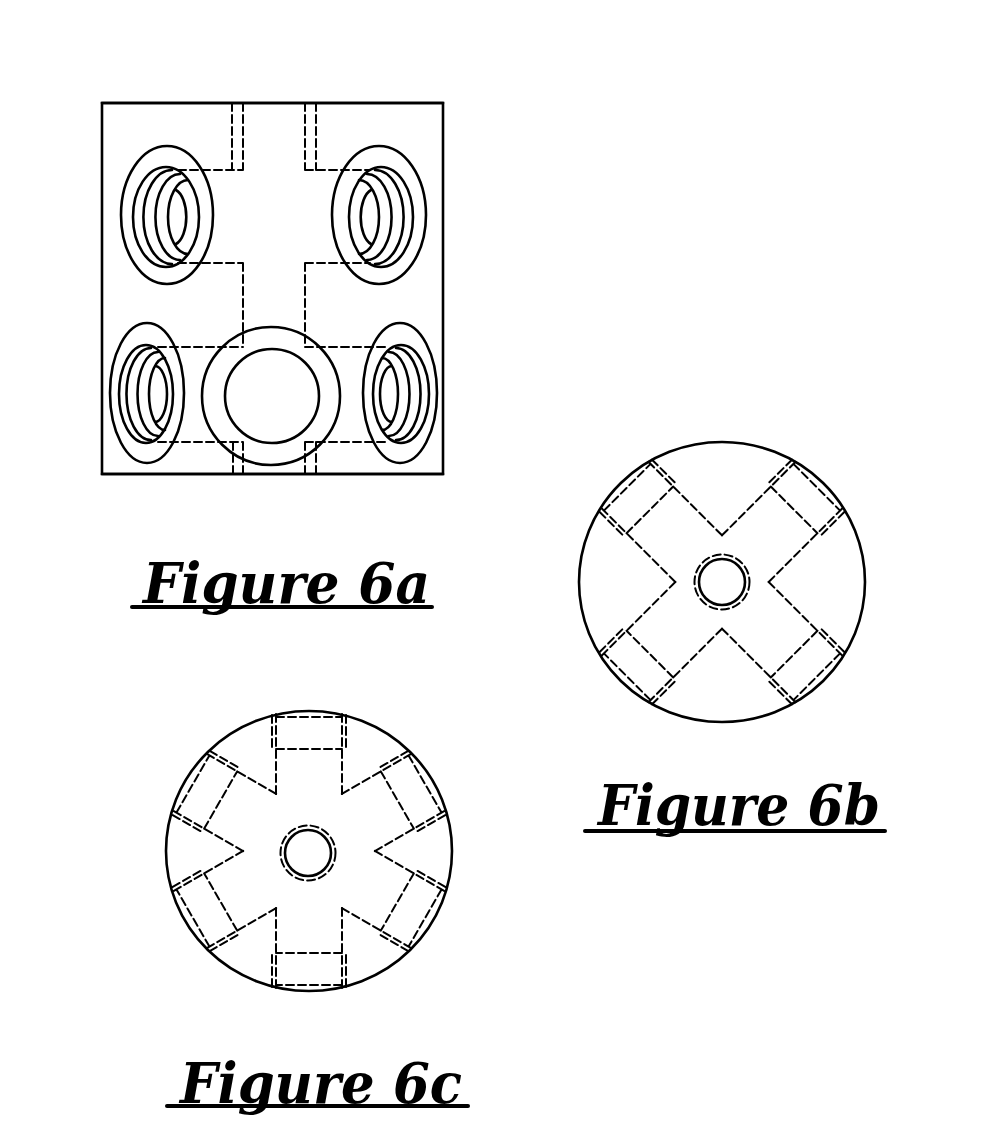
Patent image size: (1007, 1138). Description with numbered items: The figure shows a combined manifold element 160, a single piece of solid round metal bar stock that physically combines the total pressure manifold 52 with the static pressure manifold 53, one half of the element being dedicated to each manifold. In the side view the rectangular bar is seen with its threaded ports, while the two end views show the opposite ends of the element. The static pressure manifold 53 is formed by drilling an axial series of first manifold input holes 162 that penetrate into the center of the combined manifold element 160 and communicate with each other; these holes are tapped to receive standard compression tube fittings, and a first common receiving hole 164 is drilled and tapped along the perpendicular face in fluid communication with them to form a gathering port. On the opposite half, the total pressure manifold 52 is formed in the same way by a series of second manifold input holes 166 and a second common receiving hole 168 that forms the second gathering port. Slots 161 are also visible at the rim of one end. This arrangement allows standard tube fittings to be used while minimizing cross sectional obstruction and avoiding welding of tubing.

In FIG. 6A, the total pressure sensing manifold 52 is at (145, 478).
In FIG. 6C, the total pressure sensing manifold 52 is at (228, 737).
In FIG. 6A, the static pressure sensing manifold 53 is at (143, 102).
In FIG. 6B, the static pressure sensing manifold 53 is at (777, 450).
In FIG. 6A, the combined manifold element 160 is at (445, 280).
In FIG. 6C, the radial slot 161 is at (430, 925).
In FIG. 6B, the first manifold input holes 162 is at (618, 680).
In FIG. 6A, the first common receiving hole 164 is at (277, 102).
In FIG. 6B, the first common receiving hole 164 is at (733, 607).
In FIG. 6A, the second manifold input holes 166 is at (118, 372).
In FIG. 6A, the second common receiving hole 168 is at (292, 475).
In FIG. 6C, the second common receiving hole 168 is at (280, 848).